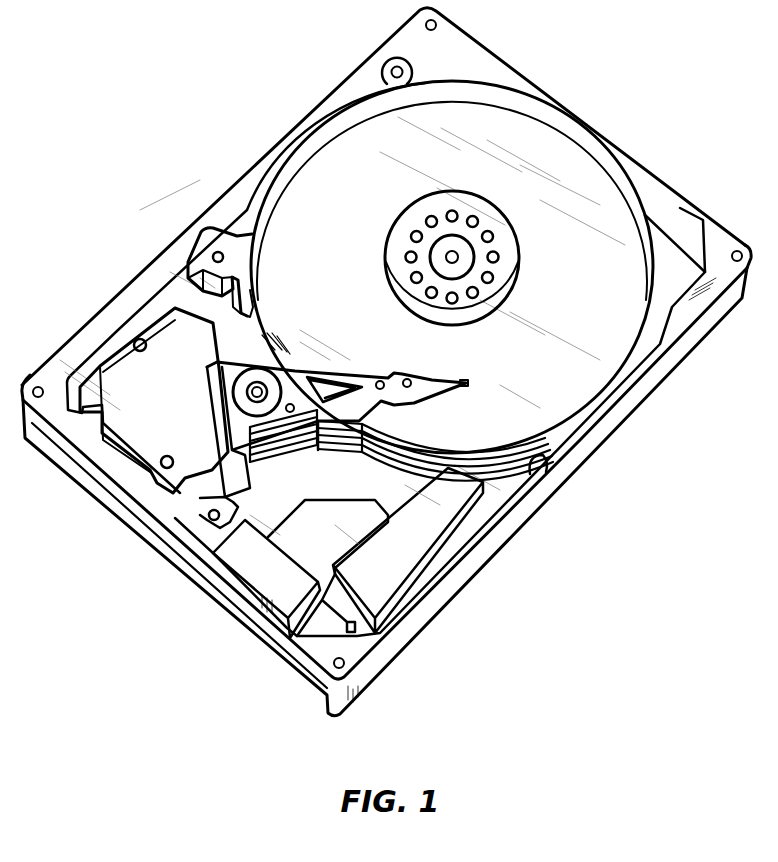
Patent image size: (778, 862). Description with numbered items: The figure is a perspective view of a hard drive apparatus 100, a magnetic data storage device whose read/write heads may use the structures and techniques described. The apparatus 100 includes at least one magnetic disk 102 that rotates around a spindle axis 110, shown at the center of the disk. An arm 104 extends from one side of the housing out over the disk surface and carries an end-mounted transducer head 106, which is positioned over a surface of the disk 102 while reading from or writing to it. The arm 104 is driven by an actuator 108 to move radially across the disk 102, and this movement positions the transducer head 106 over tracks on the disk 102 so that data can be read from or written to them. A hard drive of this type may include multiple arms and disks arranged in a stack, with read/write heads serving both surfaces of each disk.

The hard drive apparatus 100 is at (216, 42).
The magnetic disk 102 is at (305, 158).
The arm 104 is at (377, 402).
The transducer head 106 is at (464, 378).
The actuator 108 is at (153, 332).
The spindle axis 110 is at (463, 263).